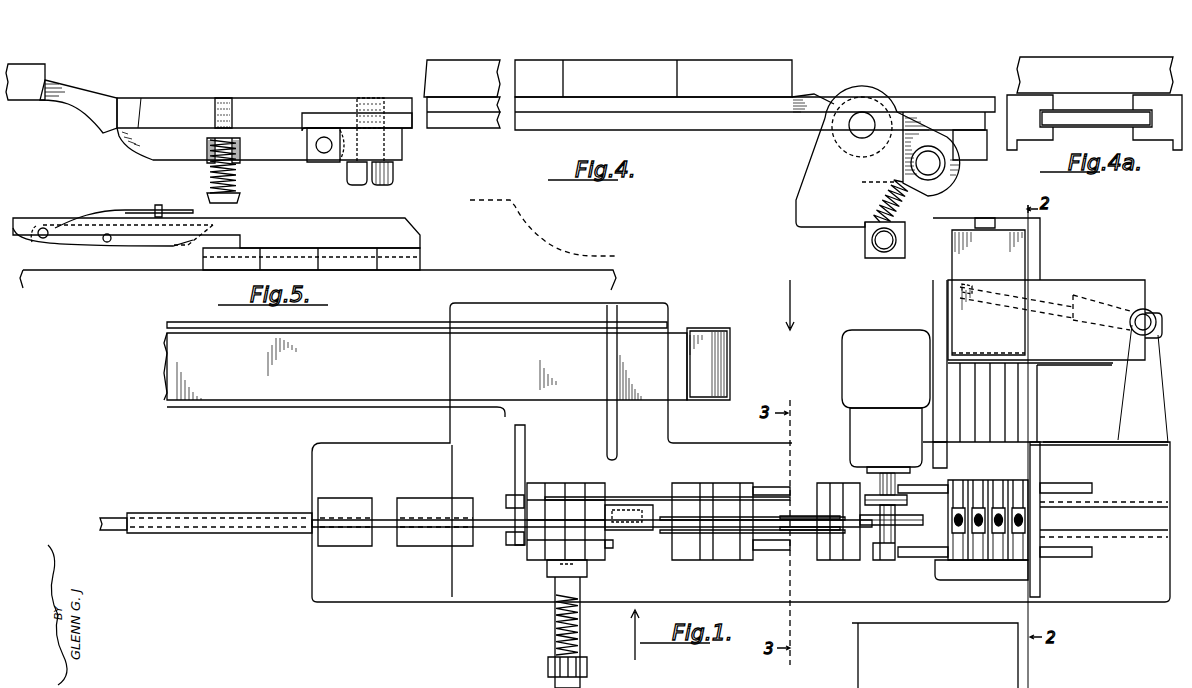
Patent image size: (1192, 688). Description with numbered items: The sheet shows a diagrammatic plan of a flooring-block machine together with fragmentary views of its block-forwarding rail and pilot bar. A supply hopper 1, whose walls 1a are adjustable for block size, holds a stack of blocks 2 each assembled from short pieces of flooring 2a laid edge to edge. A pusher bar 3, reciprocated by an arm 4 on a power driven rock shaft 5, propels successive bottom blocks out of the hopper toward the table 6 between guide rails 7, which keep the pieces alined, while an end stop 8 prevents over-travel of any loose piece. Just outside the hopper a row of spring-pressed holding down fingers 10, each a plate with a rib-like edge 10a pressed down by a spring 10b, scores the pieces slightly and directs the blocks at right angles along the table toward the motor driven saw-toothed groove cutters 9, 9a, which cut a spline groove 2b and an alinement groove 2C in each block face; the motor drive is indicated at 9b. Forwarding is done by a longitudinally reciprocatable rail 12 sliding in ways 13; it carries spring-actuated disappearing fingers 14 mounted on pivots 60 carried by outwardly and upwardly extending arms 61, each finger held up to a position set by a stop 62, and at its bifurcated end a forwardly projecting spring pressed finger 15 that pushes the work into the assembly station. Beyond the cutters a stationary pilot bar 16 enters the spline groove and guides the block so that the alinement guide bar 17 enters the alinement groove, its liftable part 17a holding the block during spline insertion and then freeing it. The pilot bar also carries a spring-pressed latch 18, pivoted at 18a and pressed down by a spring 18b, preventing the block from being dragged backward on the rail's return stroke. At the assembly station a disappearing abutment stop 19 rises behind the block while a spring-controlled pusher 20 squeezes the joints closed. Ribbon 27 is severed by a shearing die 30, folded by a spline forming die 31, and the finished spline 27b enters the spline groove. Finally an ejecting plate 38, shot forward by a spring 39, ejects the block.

In FIG. 1, the supply hopper 1 is at (1037, 399).
In FIG. 1, the hopper walls 1a is at (945, 306).
In FIG. 1, the block 2 is at (1037, 382).
In FIG. 5, the pieces of flooring 2a is at (22, 100).
In FIG. 4, the pieces of flooring 2a is at (608, 94).
In FIG. 1, the pieces of flooring 2a is at (1037, 420).
In FIG. 1, the spline groove 2b is at (846, 526).
In FIG. 1, the alinement groove 2C is at (818, 504).
In FIG. 1, the pusher bar 3 is at (986, 286).
In FIG. 1, the arm 4 is at (1049, 293).
In FIG. 1, the rock shaft 5 is at (1144, 310).
In FIG. 1, the table 6 is at (894, 588).
In FIG. 1, the guide rails 7 is at (947, 459).
In FIG. 1, the end stop 8 is at (958, 575).
In FIG. 4, the groove cutter 9 is at (534, 224).
In FIG. 1, the groove cutter 9 is at (870, 526).
In FIG. 1, the groove cutter 9a is at (863, 514).
In FIG. 1, the motor shaft 9b is at (878, 467).
In FIG. 1, the holding down fingers 10 is at (1018, 527).
In FIG. 1, the transverse ribs 10a is at (990, 543).
In FIG. 1, the spring 10b is at (1023, 515).
In FIG. 4, the reciprocatable rail 12 is at (707, 110).
In FIG. 4A, the reciprocatable rail 12 is at (1096, 114).
In FIG. 1, the reciprocatable rail 12 is at (670, 543).
In FIG. 4A, the ways 13 is at (1043, 105).
In FIG. 1, the ways 13 is at (1118, 500).
In FIG. 4, the disappearing fingers 14 is at (813, 97).
In FIG. 1, the disappearing fingers 14 is at (765, 487).
In FIG. 5, the forwardly projecting finger 15 is at (92, 91).
In FIG. 1, the forwardly projecting finger 15 is at (622, 515).
In FIG. 5, the pilot bar 16 is at (290, 228).
In FIG. 1, the pilot bar 16 is at (812, 526).
In FIG. 1, the alinement guide bar 17 is at (700, 495).
In FIG. 1, the liftable part of alinement bar 17a is at (572, 499).
In FIG. 5, the spring-pressed latch 18 is at (196, 250).
In FIG. 1, the spring-pressed latch 18 is at (740, 500).
In FIG. 5, the pivot 18a is at (43, 228).
In FIG. 5, the spring 18b is at (136, 210).
In FIG. 1, the disappearing abutment stop 19 is at (612, 543).
In FIG. 1, the spring-controlled pusher 20 is at (507, 497).
In FIG. 1, the ribbon 27 is at (113, 512).
In FIG. 1, the spline 27b is at (500, 525).
In FIG. 1, the shearing die 30 is at (345, 497).
In FIG. 1, the spline forming die 31 is at (430, 500).
In FIG. 1, the ejecting plate 38 is at (570, 585).
In FIG. 1, the spring 39 is at (580, 621).
In FIG. 4, the pivots 60 is at (863, 114).
In FIG. 4, the arms 61 is at (898, 135).
In FIG. 4, the stop 62 is at (897, 174).